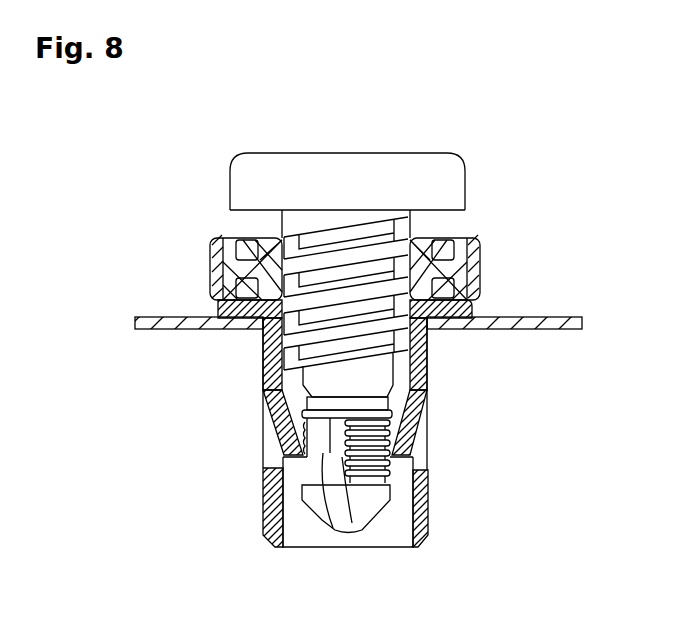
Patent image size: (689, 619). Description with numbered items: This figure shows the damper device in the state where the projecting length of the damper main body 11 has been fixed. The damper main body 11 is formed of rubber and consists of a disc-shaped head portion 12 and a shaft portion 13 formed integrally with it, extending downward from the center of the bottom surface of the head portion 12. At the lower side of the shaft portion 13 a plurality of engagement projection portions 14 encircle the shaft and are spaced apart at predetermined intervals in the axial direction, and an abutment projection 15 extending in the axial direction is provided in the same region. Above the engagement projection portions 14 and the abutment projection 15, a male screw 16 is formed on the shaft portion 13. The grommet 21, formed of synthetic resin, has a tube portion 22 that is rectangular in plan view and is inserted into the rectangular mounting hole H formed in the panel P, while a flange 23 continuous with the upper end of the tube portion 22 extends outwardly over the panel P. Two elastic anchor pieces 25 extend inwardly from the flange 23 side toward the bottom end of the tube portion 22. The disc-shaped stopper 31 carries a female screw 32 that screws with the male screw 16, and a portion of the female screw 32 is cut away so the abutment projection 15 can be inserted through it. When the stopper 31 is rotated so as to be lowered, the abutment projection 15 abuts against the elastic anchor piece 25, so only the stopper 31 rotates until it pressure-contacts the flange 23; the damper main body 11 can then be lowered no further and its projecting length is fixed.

The damper main body 11 is at (231, 158).
The head portion 12 is at (441, 168).
The male screw 16 is at (341, 255).
The stopper 31 is at (466, 262).
The female screw 32 is at (441, 240).
The flange 23 is at (470, 309).
The panel P is at (175, 317).
The mounting hole H is at (265, 339).
The grommet 21 is at (262, 505).
The elastic anchor piece 25 is at (272, 433).
The tube portion 22 is at (428, 491).
The shaft portion 13 is at (380, 363).
The engagement projection portions 14 is at (379, 487).
The abutment projection 15 is at (328, 520).